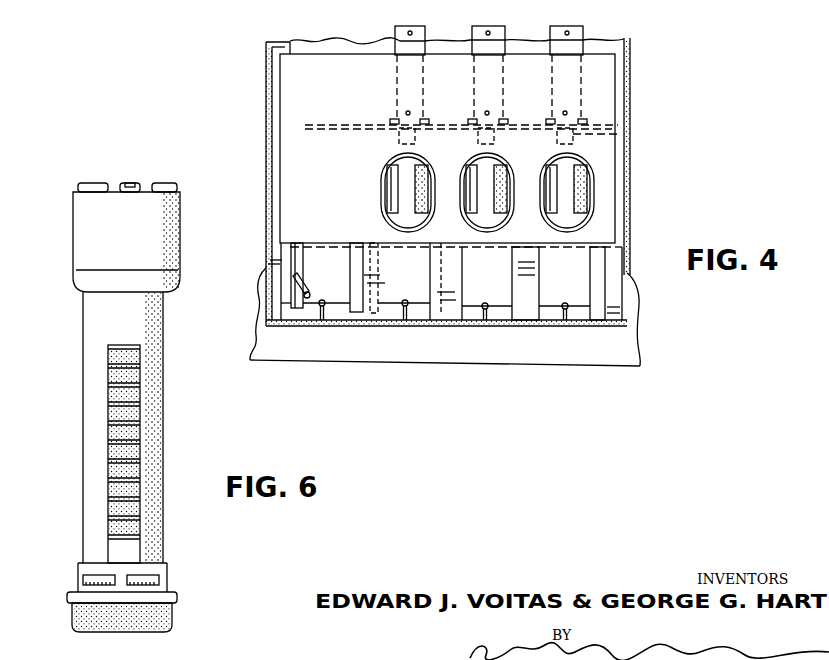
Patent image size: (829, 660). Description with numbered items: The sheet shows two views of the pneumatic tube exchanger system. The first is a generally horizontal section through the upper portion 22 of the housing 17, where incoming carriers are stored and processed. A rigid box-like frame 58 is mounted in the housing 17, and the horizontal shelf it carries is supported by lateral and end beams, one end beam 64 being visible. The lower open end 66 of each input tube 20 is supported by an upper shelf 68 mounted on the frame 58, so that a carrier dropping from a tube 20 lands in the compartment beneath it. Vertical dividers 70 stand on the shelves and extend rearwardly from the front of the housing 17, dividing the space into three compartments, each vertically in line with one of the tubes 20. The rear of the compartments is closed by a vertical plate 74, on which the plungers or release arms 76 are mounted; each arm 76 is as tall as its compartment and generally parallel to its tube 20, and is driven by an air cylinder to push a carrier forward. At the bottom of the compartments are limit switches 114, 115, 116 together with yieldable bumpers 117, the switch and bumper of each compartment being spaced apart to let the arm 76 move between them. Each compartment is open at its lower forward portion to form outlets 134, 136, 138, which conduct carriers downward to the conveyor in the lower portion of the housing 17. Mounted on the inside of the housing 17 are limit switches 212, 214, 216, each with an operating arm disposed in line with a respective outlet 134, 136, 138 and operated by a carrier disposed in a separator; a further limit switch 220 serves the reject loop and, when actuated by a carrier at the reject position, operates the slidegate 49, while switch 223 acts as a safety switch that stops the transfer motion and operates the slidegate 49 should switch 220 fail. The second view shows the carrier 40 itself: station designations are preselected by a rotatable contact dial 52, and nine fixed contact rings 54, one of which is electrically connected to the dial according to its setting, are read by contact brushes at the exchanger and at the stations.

In FIG. 4, the housing 17 is at (631, 74).
In FIG. 4, the upper portion 22 is at (624, 112).
In FIG. 4, the box-like frame 58 is at (262, 137).
In FIG. 4, the vertical plate 74 is at (433, 121).
In FIG. 4, the release arm 76 is at (620, 137).
In FIG. 4, the upper shelf 68 is at (590, 162).
In FIG. 4, the lower open end 66 is at (385, 168).
In FIG. 4, the yieldable bumper 117 is at (418, 166).
In FIG. 4, the limit switch 116 is at (392, 201).
In FIG. 4, the limit switch 115 is at (471, 212).
In FIG. 4, the limit switch 114 is at (551, 206).
In FIG. 4, the input tube 20 is at (590, 212).
In FIG. 4, the end beam 64 is at (275, 241).
In FIG. 4, the vertical divider 70 is at (600, 281).
In FIG. 4, the outlet 138 is at (420, 290).
In FIG. 4, the outlet 136 is at (502, 293).
In FIG. 4, the outlet 134 is at (582, 285).
In FIG. 4, the safety switch 223 is at (300, 287).
In FIG. 4, the limit switch 220 is at (317, 318).
In FIG. 4, the limit switch 216 is at (408, 317).
In FIG. 4, the limit switch 214 is at (490, 320).
In FIG. 4, the limit switch 212 is at (573, 320).
In FIG. 4, the slidegate 49 is at (553, 305).
In FIG. 6, the carrier 40 is at (76, 223).
In FIG. 6, the fixed contact ring 54 is at (115, 373).
In FIG. 6, the rotatable contact dial 52 is at (92, 574).